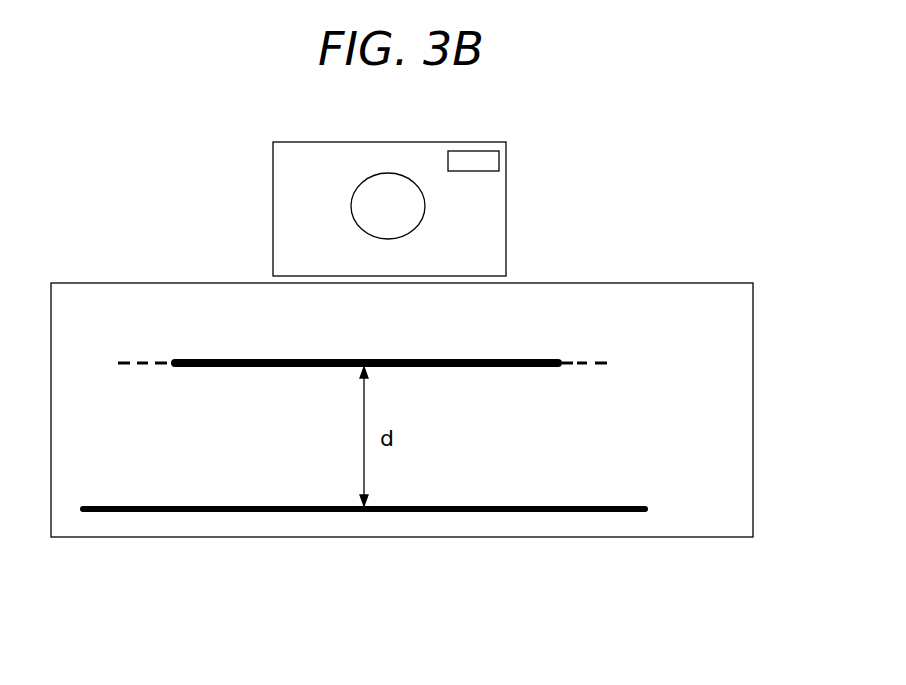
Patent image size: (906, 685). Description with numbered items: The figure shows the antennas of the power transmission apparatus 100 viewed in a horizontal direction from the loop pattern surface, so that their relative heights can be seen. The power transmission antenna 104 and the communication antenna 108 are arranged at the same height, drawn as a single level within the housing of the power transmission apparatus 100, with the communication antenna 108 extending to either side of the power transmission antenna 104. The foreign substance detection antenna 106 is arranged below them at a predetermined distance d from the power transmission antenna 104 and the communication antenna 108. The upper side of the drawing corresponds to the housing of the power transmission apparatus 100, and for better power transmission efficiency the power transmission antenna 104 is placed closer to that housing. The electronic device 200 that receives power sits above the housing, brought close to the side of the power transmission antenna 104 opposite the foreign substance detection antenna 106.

The power transmission apparatus 100 is at (667, 283).
The power transmission antenna 104 is at (193, 358).
The foreign substance detection antenna 106 is at (645, 509).
The communication antenna 108 is at (606, 362).
The electronic device 200 is at (507, 197).